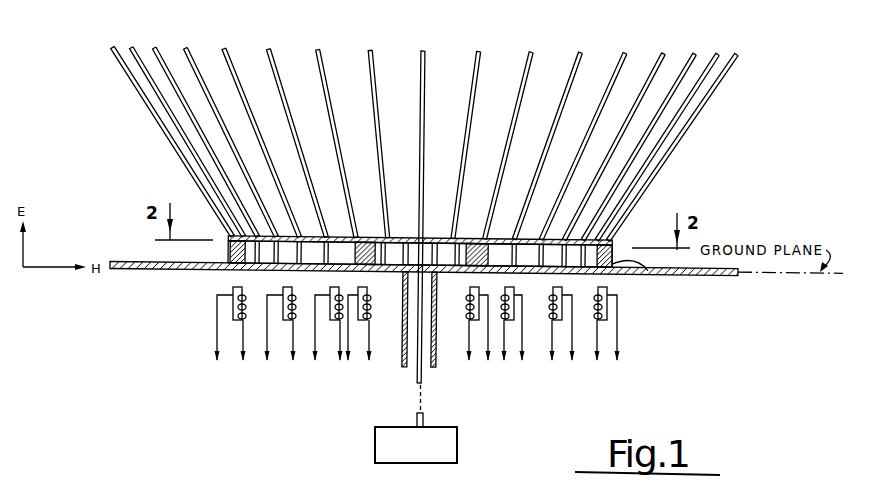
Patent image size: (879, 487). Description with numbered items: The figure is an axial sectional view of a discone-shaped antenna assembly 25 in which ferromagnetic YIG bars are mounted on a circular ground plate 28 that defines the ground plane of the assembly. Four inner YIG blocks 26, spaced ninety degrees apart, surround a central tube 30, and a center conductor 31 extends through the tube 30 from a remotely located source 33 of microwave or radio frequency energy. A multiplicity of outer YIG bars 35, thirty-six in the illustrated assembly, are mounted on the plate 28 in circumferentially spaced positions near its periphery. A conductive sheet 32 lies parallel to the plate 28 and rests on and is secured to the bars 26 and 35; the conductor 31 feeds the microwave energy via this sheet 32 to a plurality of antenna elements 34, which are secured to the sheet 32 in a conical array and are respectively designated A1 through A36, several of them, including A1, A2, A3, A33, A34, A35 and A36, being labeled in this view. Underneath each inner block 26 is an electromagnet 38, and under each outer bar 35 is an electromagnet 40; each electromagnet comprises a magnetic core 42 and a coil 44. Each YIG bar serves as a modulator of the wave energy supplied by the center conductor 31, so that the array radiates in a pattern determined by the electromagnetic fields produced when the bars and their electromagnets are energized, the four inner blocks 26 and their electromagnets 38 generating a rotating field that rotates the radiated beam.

The antenna element A1 is at (423, 48).
The antenna element A2 is at (478, 48).
The antenna element A3 is at (531, 48).
The antenna element A33 is at (222, 48).
The antenna element A34 is at (267, 48).
The antenna element A35 is at (316, 48).
The antenna element A36 is at (369, 48).
The antenna 25 is at (704, 127).
The inner YIG blocks 26 is at (367, 237).
The circular ground plate 28 is at (157, 273).
The central tube 30 is at (437, 359).
The center conductor 31 is at (404, 372).
The conductive sheet 32 is at (337, 238).
The source of microwave or radio frequency energy 33 is at (458, 443).
The antenna elements 34 is at (724, 75).
The outer YIG bars 35 is at (621, 280).
The electromagnet 38 is at (362, 348).
The electromagnet 40 is at (236, 315).
The magnetic core 42 is at (240, 330).
The coil 44 is at (236, 300).